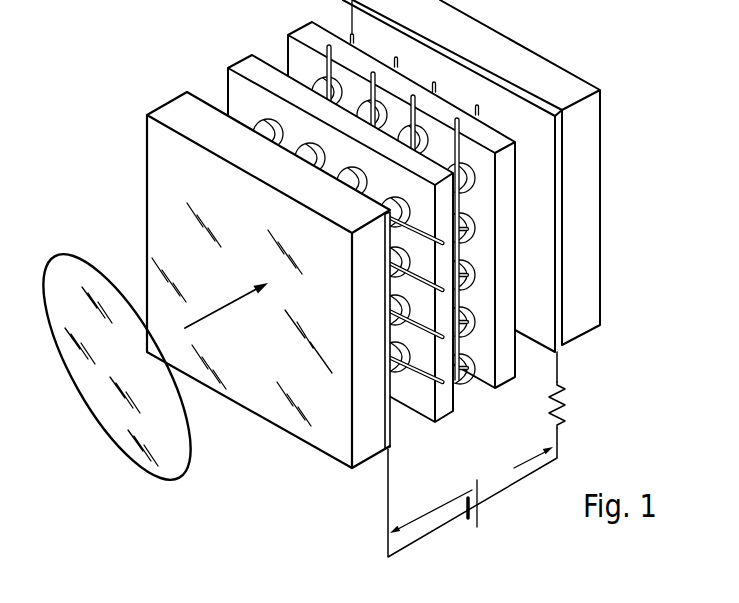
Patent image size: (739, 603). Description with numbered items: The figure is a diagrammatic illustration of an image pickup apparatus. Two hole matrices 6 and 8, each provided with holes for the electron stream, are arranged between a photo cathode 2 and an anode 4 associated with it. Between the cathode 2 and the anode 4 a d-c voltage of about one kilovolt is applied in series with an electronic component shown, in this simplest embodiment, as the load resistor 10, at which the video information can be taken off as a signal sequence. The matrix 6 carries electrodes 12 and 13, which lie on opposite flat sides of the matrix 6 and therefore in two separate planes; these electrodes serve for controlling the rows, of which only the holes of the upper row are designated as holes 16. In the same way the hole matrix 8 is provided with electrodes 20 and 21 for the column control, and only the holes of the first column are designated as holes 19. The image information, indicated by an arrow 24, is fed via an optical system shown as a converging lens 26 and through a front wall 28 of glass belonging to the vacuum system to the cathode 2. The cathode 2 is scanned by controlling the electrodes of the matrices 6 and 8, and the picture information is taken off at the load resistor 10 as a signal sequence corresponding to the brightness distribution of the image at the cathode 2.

The photo cathode 2 is at (390, 437).
The anode 4 is at (563, 343).
The hole matrix 6 is at (247, 66).
The hole matrix 8 is at (310, 34).
The load resistor 10 is at (566, 414).
The electrodes 12 is at (470, 353).
The electrodes 13 is at (413, 281).
The holes 16 is at (312, 152).
The holes 19 is at (465, 268).
The electrodes 20 is at (331, 58).
The electrodes 21 is at (433, 83).
The arrow 24 is at (222, 312).
The converging lens 26 is at (180, 445).
The front wall 28 is at (293, 427).